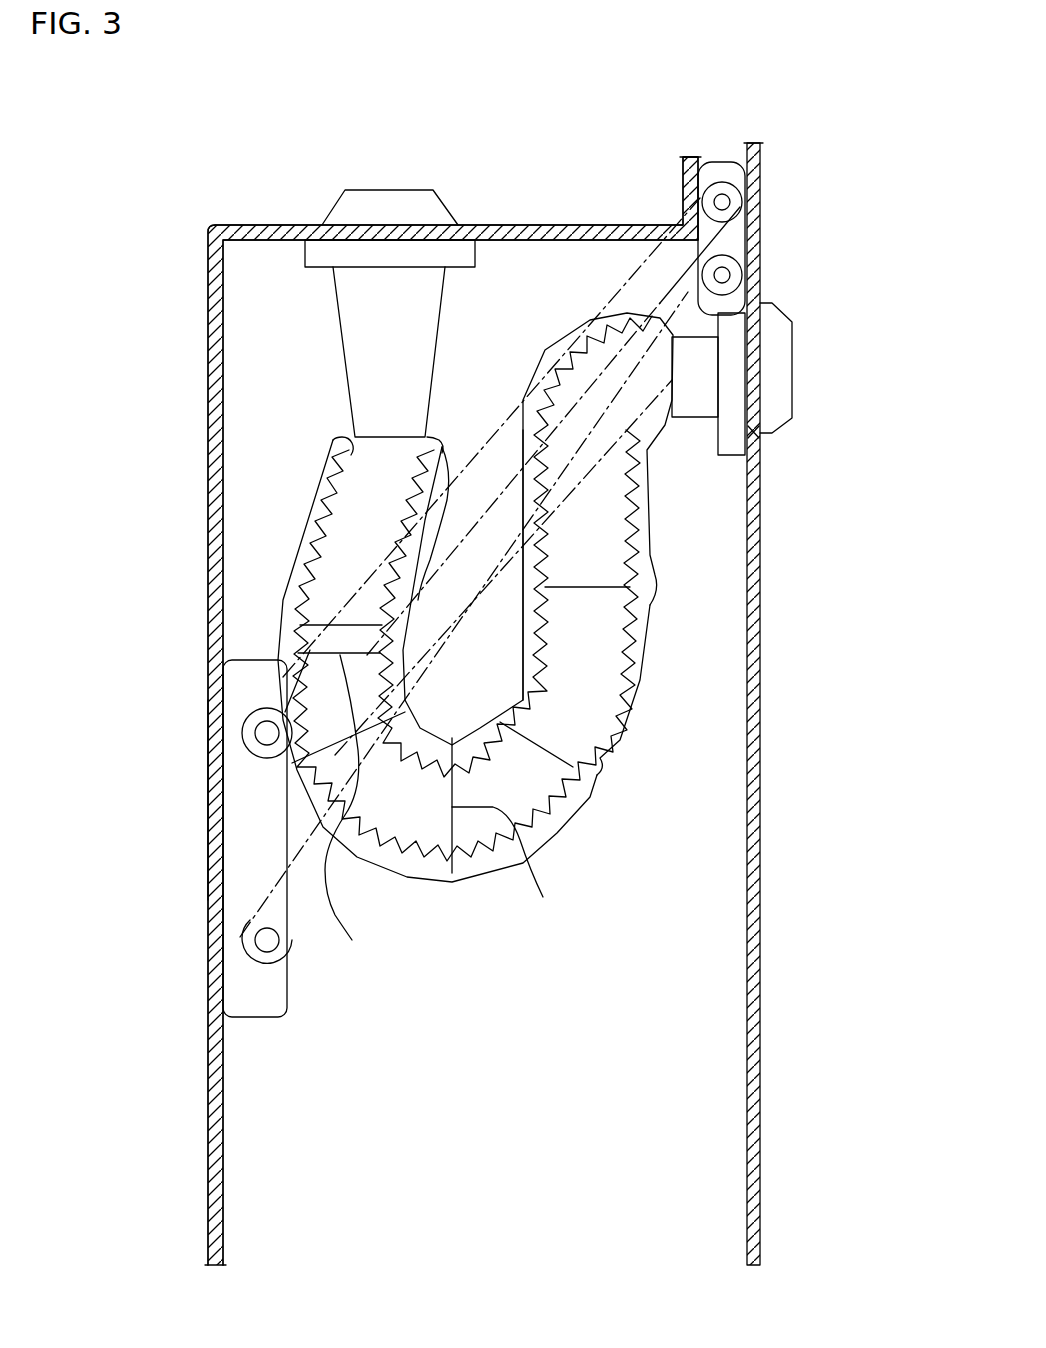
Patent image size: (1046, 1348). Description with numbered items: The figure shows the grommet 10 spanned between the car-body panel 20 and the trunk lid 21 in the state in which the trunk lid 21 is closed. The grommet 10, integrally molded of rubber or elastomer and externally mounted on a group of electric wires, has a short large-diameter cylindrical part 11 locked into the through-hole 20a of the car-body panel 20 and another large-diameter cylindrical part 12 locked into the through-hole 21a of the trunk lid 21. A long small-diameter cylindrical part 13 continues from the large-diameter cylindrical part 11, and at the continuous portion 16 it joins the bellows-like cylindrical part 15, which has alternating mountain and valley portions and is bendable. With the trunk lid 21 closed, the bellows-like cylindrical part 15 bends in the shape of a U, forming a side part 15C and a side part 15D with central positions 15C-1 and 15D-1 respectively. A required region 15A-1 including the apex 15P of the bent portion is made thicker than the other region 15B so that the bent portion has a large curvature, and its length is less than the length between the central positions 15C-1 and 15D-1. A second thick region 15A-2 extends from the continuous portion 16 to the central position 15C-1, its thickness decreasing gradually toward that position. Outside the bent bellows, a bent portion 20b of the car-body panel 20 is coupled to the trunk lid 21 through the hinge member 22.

The grommet 10 is at (606, 843).
The large-diameter cylindrical part 11 is at (372, 195).
The large-diameter cylindrical part 12 is at (790, 352).
The small-diameter cylindrical part 13 is at (358, 318).
The bellows-like cylindrical part 15 is at (605, 793).
The thick region 15A-1 is at (474, 880).
The thick region 15A-2 is at (302, 528).
The other region 15B is at (655, 575).
The side part 15C is at (418, 585).
The central position of side part 15C-1 is at (371, 815).
The side part 15D is at (527, 515).
The central position of side part 15D-1 is at (593, 588).
The apex of bent portion 15P is at (522, 871).
The continuous portion 16 is at (352, 435).
The car-body panel 20 is at (247, 225).
The through-hole 20a is at (458, 220).
The bent portion 20b is at (210, 565).
The trunk lid 21 is at (762, 491).
The through-hole 21a is at (762, 432).
The hinge member 22 is at (297, 933).